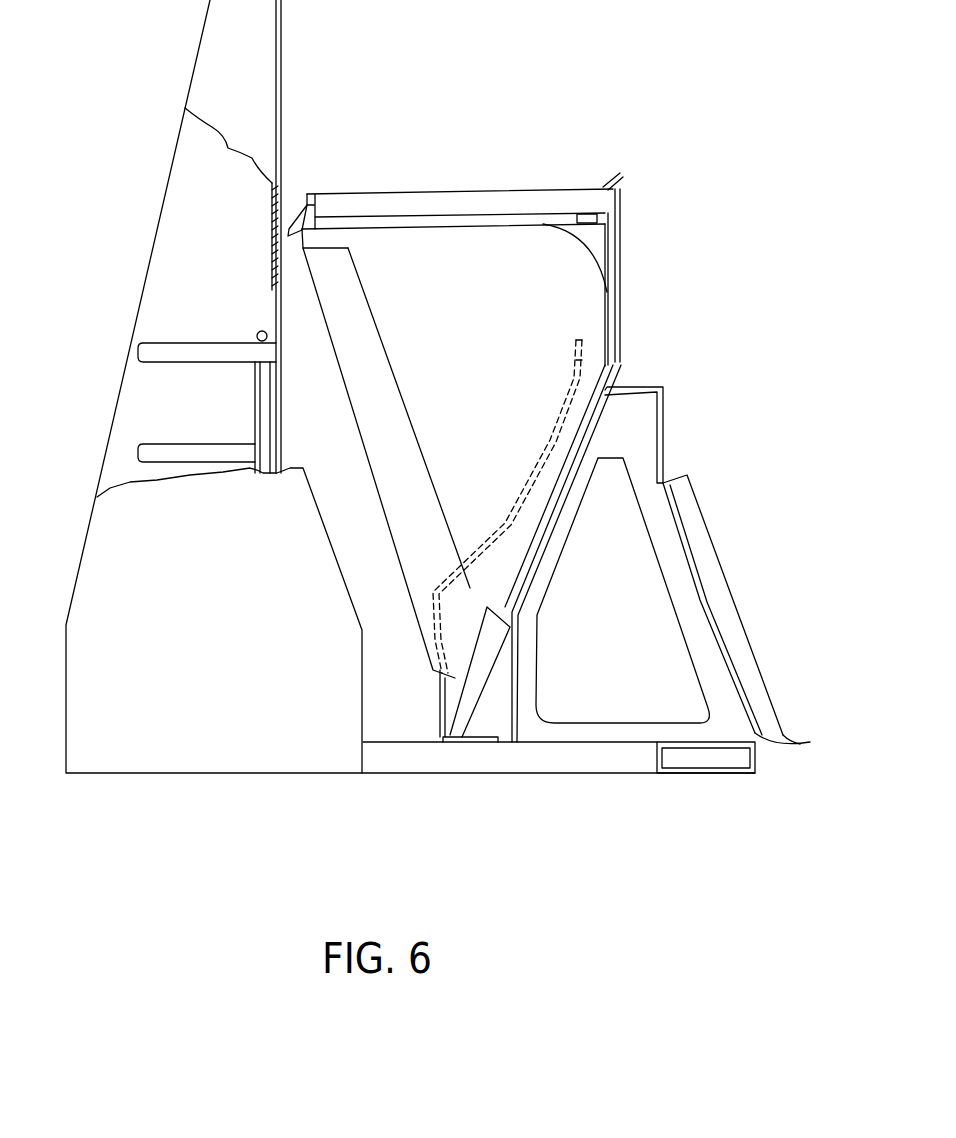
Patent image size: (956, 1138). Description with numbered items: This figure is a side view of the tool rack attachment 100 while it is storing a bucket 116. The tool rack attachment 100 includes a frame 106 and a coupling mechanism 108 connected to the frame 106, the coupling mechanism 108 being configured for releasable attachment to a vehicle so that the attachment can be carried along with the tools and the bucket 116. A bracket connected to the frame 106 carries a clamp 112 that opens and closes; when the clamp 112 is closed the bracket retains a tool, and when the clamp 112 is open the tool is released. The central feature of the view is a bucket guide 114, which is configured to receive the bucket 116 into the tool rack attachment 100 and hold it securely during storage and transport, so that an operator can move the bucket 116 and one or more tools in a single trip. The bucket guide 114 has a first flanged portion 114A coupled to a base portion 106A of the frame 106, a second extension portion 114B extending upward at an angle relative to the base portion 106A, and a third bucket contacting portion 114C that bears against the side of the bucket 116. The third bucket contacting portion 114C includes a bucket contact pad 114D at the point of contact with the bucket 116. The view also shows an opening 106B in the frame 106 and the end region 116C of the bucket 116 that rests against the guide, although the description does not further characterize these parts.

The tool rack attachment 100 is at (646, 120).
The frame 106 is at (188, 777).
The base portion 106A is at (465, 763).
The base opening 106B is at (528, 650).
The coupling mechanism 108 is at (772, 690).
The clamp 112 is at (187, 355).
The bucket guide 114 is at (582, 357).
The first flanged portion 114A is at (481, 745).
The second extension portion 114B is at (440, 690).
The third bucket contacting portion 114C is at (556, 345).
The bucket contact pad 114D is at (550, 460).
The bucket 116 is at (443, 275).
The arm bracket end 116C is at (570, 362).